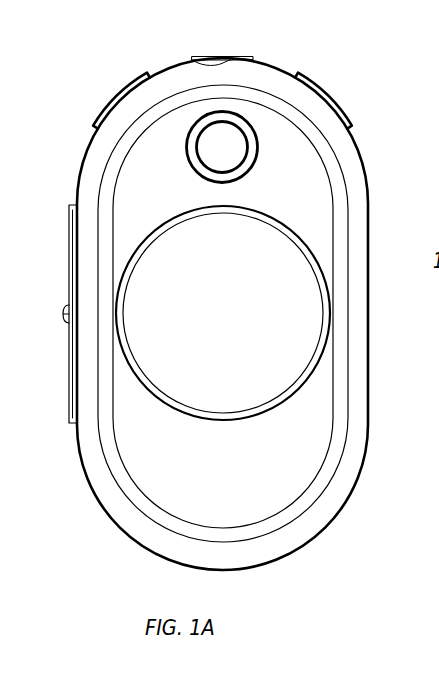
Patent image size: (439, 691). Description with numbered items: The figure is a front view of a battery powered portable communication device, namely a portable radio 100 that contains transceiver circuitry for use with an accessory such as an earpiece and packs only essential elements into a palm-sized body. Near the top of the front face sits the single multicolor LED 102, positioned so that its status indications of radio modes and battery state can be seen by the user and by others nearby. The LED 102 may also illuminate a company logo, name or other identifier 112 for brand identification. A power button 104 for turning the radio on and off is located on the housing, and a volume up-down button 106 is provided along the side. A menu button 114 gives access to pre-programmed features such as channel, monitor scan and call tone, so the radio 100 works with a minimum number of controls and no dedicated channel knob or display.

The portable radio 100 is at (369, 436).
The single multicolor LED 102 is at (254, 143).
The power button 104 is at (115, 95).
The volume up-down button 106 is at (69, 277).
The identifier 112 is at (224, 135).
The menu button 114 is at (334, 90).